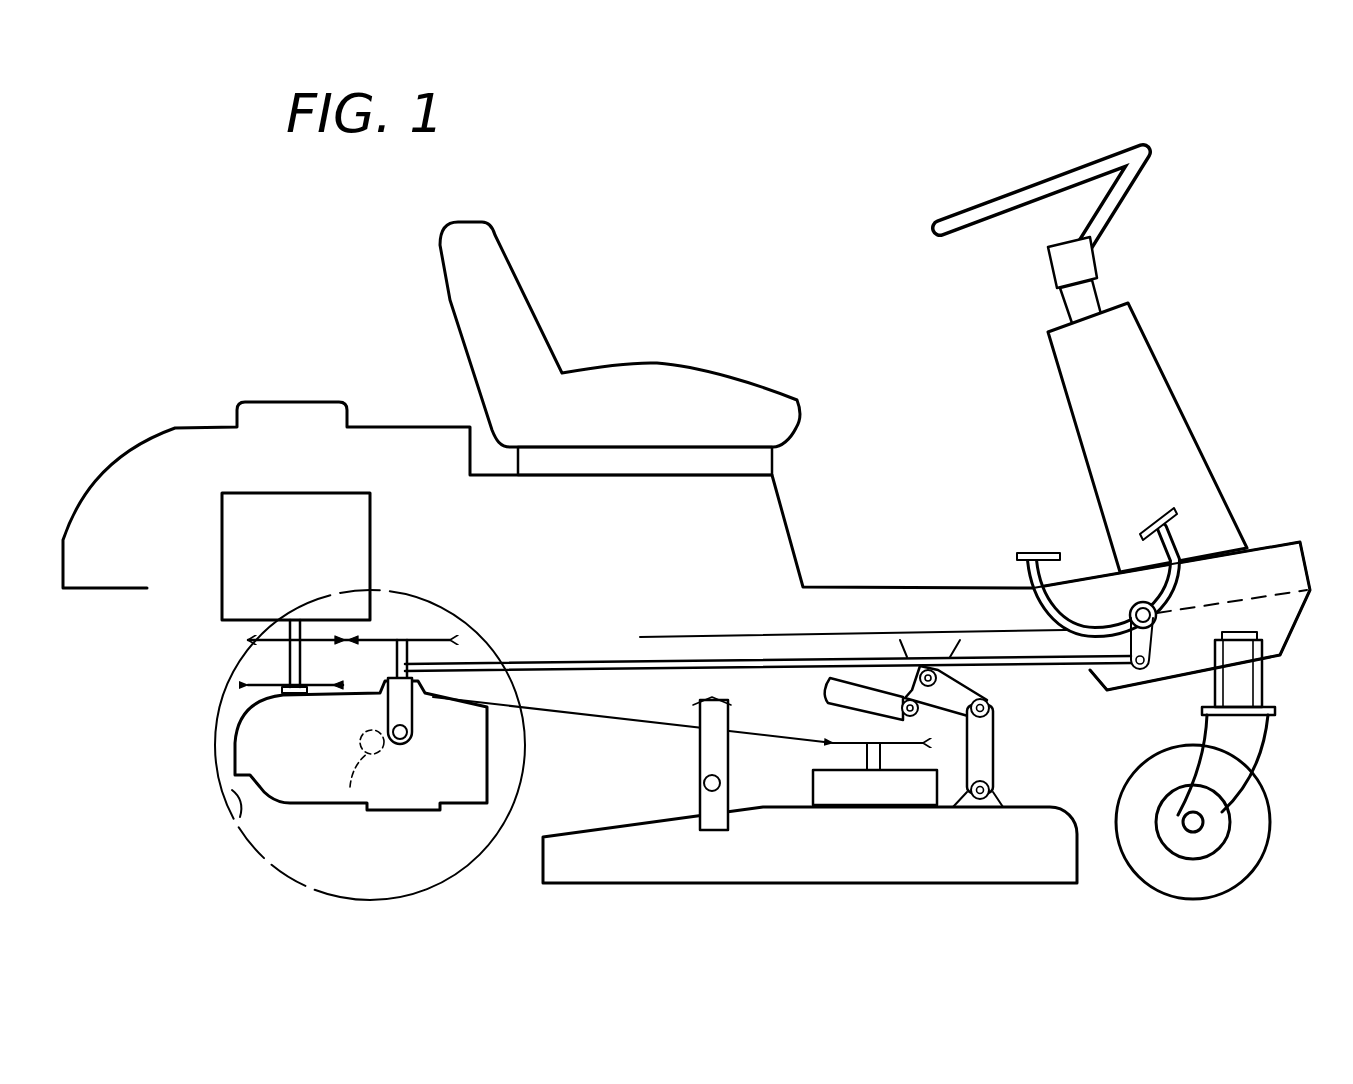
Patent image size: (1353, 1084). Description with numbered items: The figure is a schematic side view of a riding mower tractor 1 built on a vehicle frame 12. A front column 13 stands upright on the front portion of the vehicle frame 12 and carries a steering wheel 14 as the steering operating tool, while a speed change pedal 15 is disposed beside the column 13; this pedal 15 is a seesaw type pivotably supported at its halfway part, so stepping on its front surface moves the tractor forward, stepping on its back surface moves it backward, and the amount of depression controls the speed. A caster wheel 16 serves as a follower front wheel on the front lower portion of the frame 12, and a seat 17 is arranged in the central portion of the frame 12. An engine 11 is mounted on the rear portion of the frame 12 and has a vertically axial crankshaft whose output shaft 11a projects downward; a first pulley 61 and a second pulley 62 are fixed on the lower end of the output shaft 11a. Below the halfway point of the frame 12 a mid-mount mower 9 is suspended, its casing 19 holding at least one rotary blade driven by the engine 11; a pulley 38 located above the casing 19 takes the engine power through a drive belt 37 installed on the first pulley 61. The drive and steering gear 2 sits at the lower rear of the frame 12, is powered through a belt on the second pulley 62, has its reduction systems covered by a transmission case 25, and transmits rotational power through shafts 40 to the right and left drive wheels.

The mower tractor 1 is at (754, 237).
The drive and steering gear 2 is at (228, 744).
The mower 9 is at (1020, 798).
The engine 11 is at (308, 543).
The output shaft 11a is at (284, 657).
The vehicle frame 12 is at (1262, 562).
The front column 13 is at (1130, 345).
The steering wheel 14 is at (975, 226).
The speed change pedal 15 is at (1032, 555).
The caster wheel 16 is at (1255, 805).
The seat 17 is at (590, 376).
The casing 19 is at (996, 866).
The transmission case 25 is at (240, 823).
The drive belt 37 is at (595, 713).
The pulley 38 is at (849, 738).
The shaft 40 is at (365, 808).
The first pulley 61 is at (248, 686).
The second pulley 62 is at (248, 640).